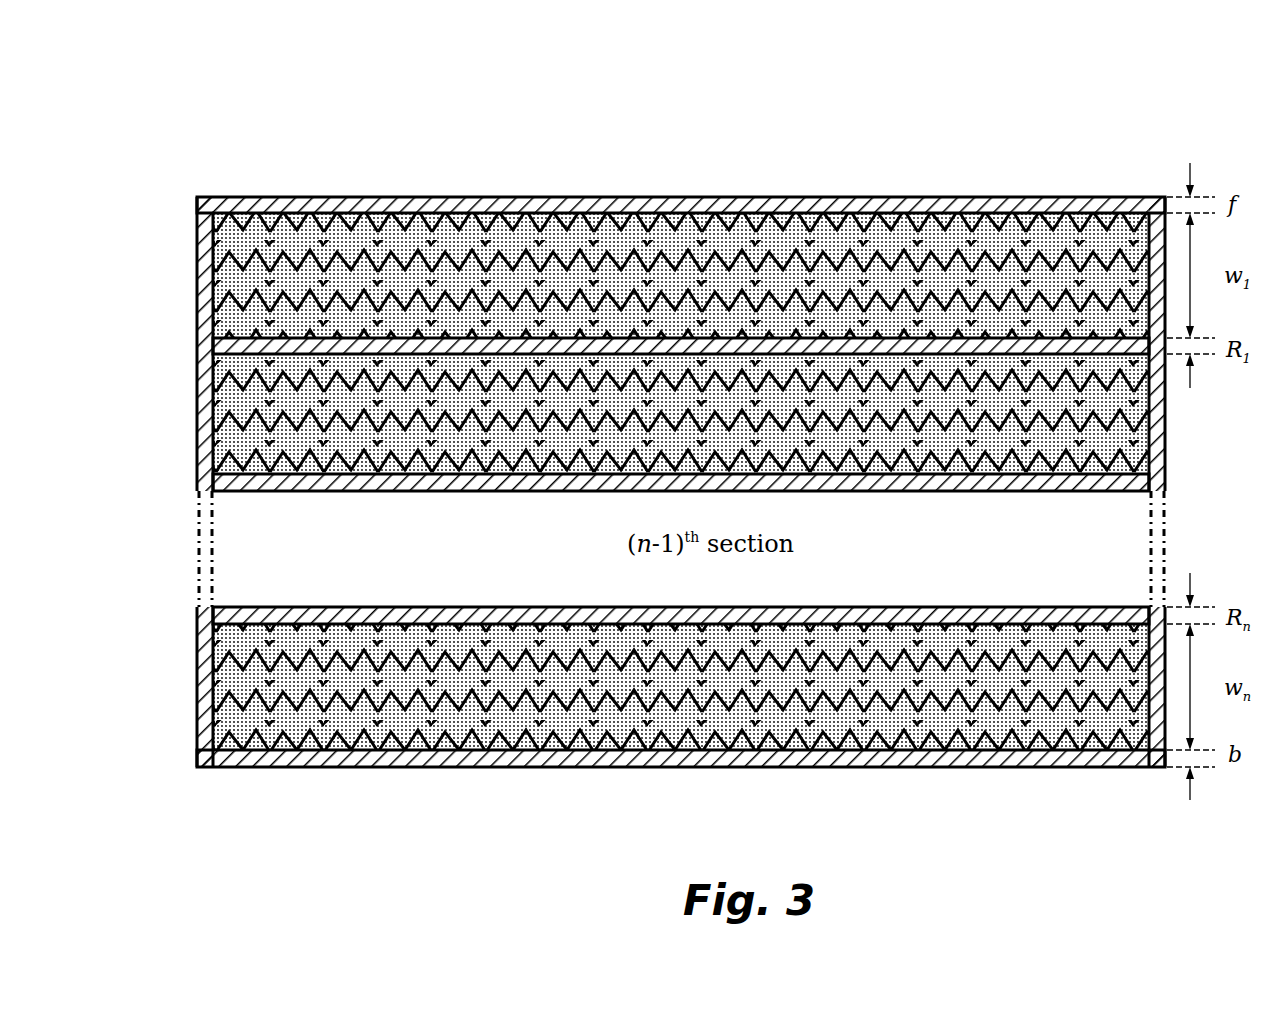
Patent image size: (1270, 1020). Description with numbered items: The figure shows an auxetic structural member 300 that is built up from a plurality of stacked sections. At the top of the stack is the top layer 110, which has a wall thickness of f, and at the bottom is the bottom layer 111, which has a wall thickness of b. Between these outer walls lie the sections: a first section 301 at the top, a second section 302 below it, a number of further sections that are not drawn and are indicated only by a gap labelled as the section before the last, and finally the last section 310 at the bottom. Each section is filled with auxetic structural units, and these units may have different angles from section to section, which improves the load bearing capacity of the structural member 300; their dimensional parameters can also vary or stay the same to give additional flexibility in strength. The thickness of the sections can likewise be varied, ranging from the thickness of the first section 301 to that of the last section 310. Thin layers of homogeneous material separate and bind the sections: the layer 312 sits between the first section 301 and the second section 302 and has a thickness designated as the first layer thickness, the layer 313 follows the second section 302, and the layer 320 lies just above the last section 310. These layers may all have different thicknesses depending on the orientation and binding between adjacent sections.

The auxetic structural member 300 is at (293, 105).
The top layer 110 is at (366, 193).
The bottom layer 111 is at (647, 772).
The first section 301 is at (478, 206).
The second section 302 is at (403, 468).
The last (nth) section 310 is at (361, 740).
The layer 312 is at (618, 340).
The layer 313 is at (710, 467).
The layer 320 is at (780, 605).